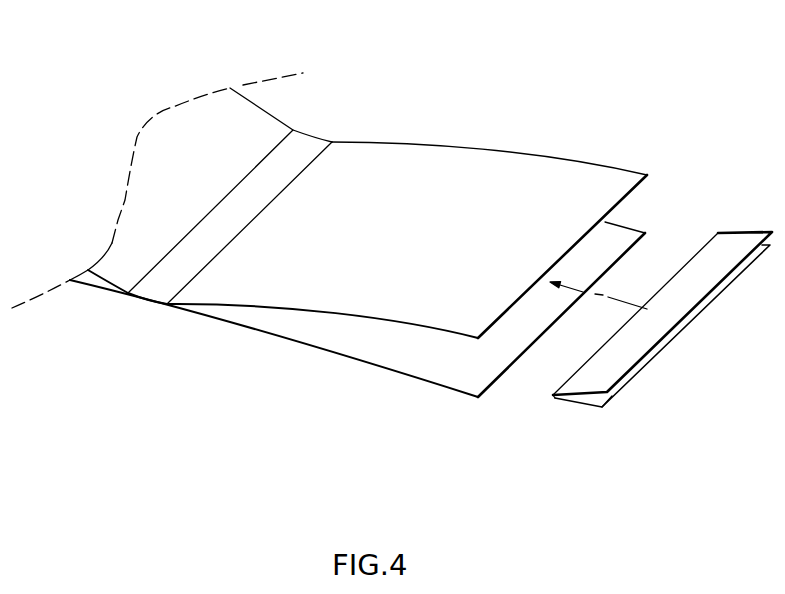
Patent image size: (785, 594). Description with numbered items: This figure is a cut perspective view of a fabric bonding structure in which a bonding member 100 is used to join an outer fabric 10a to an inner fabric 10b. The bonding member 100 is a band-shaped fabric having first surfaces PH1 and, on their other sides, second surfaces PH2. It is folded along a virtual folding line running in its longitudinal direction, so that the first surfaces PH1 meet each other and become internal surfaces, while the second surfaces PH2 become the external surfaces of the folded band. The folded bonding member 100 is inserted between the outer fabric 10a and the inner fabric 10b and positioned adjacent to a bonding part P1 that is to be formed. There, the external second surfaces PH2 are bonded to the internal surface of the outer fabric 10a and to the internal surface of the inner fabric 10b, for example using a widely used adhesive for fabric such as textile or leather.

The bonding part P1 is at (283, 167).
The outer fabric 10a is at (523, 180).
The inner fabric 10b is at (382, 348).
The bonding member 100 is at (650, 356).
The first surfaces PH1 is at (610, 391).
The second surfaces PH2 is at (593, 383).